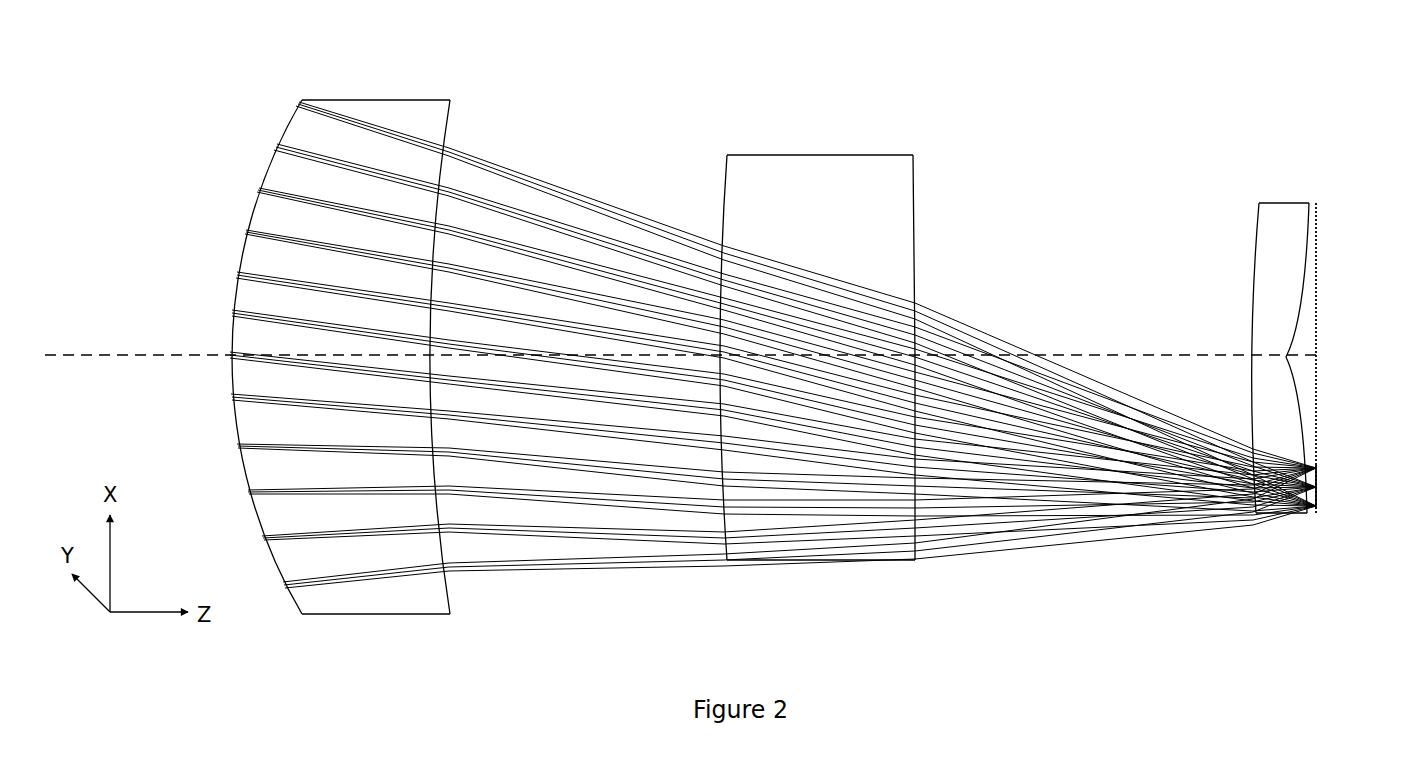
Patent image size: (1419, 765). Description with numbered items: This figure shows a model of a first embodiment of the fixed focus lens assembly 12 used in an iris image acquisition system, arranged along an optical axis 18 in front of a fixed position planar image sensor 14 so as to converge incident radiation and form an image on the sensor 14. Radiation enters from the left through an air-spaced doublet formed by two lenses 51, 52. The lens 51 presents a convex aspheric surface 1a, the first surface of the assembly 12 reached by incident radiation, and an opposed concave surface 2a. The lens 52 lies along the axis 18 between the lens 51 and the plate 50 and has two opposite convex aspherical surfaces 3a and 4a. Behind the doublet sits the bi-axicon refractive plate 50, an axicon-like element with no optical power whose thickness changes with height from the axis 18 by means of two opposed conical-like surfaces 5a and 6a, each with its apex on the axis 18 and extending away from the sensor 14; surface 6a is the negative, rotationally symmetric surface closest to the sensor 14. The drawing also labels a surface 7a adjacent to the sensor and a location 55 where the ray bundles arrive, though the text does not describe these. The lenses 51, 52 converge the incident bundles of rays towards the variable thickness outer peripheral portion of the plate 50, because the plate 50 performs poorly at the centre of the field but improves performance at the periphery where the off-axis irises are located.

The fixed focus lens assembly 12 is at (1103, 108).
The optical axis 18 is at (680, 342).
The convex aspheric surface 1a is at (286, 131).
The concave surface 2a is at (455, 128).
The convex aspherical surface 3a is at (722, 176).
The convex aspherical surface 4a is at (918, 194).
The axicon surface 5a is at (1255, 238).
The axicon surface 6a is at (1303, 250).
The surface of image plane element 7a is at (1318, 328).
The image sensor 14 is at (1325, 283).
The bi-axicon refractive plate 50 is at (1307, 552).
The lens 51 is at (436, 627).
The lens 52 is at (844, 573).
The image point 55 is at (1320, 487).